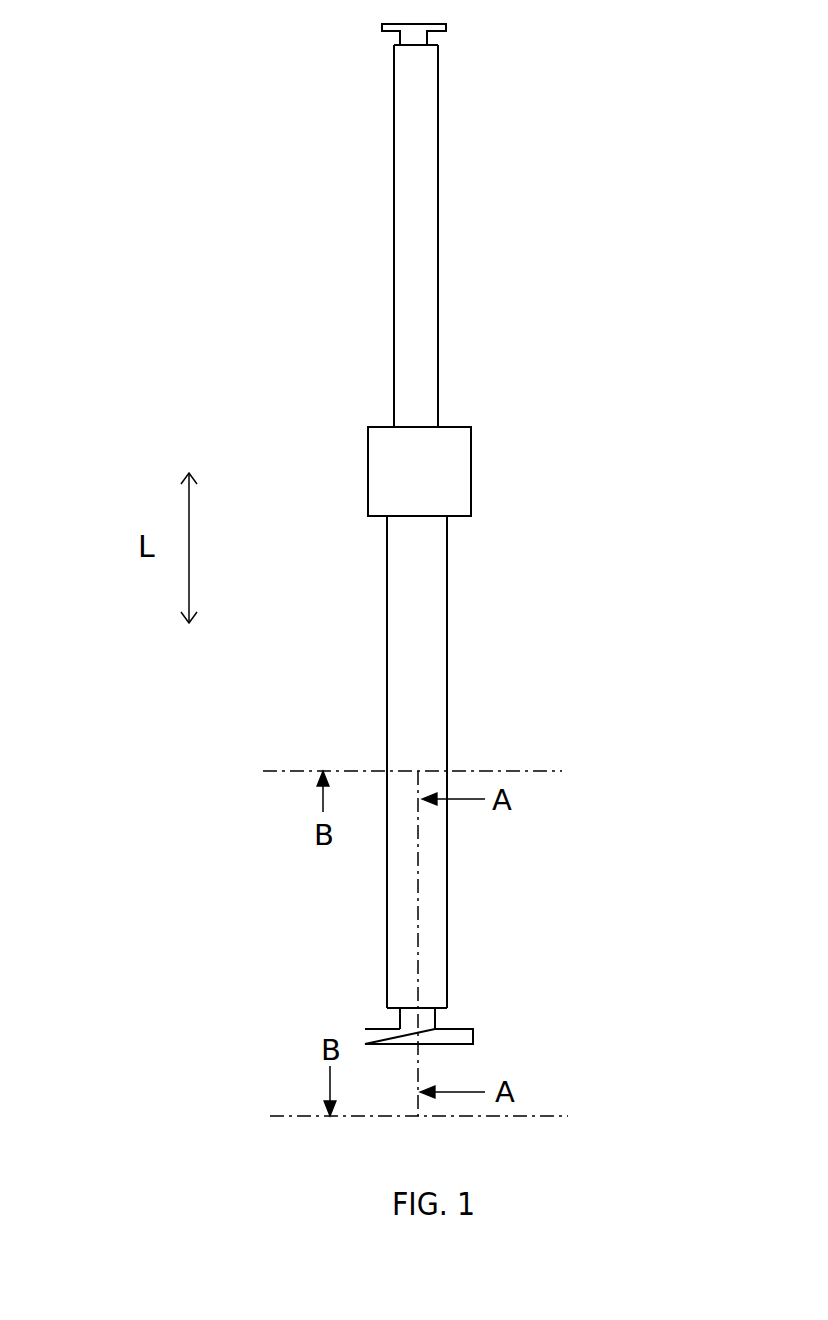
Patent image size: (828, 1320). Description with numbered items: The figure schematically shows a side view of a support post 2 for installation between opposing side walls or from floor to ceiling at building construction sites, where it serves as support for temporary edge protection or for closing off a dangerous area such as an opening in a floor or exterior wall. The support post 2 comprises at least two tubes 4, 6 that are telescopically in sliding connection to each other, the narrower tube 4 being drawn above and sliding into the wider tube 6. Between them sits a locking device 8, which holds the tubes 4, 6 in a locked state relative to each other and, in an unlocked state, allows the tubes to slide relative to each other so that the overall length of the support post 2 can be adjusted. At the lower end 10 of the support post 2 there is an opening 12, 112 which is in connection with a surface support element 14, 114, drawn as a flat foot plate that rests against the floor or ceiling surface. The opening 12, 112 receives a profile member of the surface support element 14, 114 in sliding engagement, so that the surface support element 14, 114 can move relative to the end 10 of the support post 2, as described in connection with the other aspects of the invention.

The support post 2 is at (181, 67).
The tube 4 is at (438, 233).
The tube 6 is at (447, 738).
The locking device 8 is at (472, 490).
The end of the support post 10 is at (554, 987).
The opening 12 is at (394, 1021).
The opening 112 is at (417, 1018).
The surface support element 14 is at (473, 1040).
The surface support element 114 is at (419, 1036).